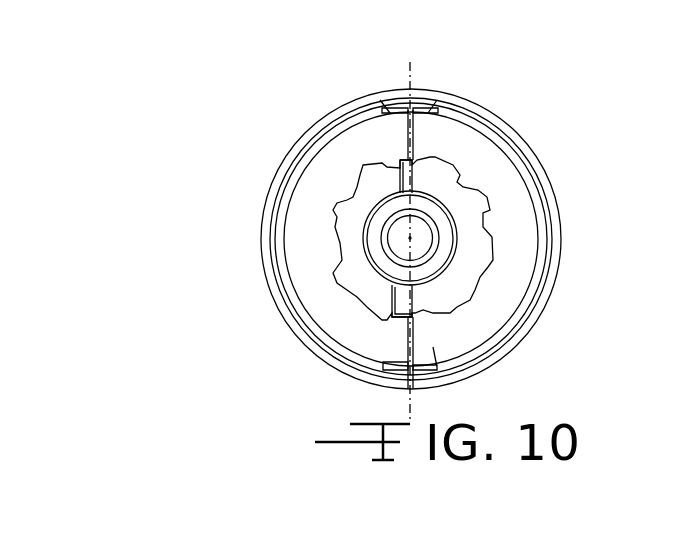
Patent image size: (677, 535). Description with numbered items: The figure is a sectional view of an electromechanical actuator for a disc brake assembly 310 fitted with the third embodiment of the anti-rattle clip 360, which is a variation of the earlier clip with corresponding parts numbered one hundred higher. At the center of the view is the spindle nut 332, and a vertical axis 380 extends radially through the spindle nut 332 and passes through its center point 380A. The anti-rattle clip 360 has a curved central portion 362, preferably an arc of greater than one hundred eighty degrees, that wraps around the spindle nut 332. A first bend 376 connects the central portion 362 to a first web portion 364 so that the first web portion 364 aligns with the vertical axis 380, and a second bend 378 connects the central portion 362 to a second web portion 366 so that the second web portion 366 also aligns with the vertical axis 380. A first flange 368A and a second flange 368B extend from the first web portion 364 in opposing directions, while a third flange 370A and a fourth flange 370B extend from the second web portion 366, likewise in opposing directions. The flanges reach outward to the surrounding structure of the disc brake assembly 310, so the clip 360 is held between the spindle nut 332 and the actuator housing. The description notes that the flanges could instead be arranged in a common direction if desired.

The disc brake assembly 310 is at (387, 85).
The vertical axis 380 is at (413, 66).
The first flange 368A is at (440, 100).
The second flange 368B is at (381, 108).
The first web portion 364 is at (413, 140).
The anti-rattle clip 360 is at (505, 208).
The first bend 376 is at (383, 182).
The center point 380A is at (410, 238).
The central portion 362 is at (460, 239).
The spindle nut 332 is at (438, 260).
The second bend 378 is at (388, 298).
The second web portion 366 is at (407, 340).
The third flange 370A is at (383, 364).
The fourth flange 370B is at (418, 365).